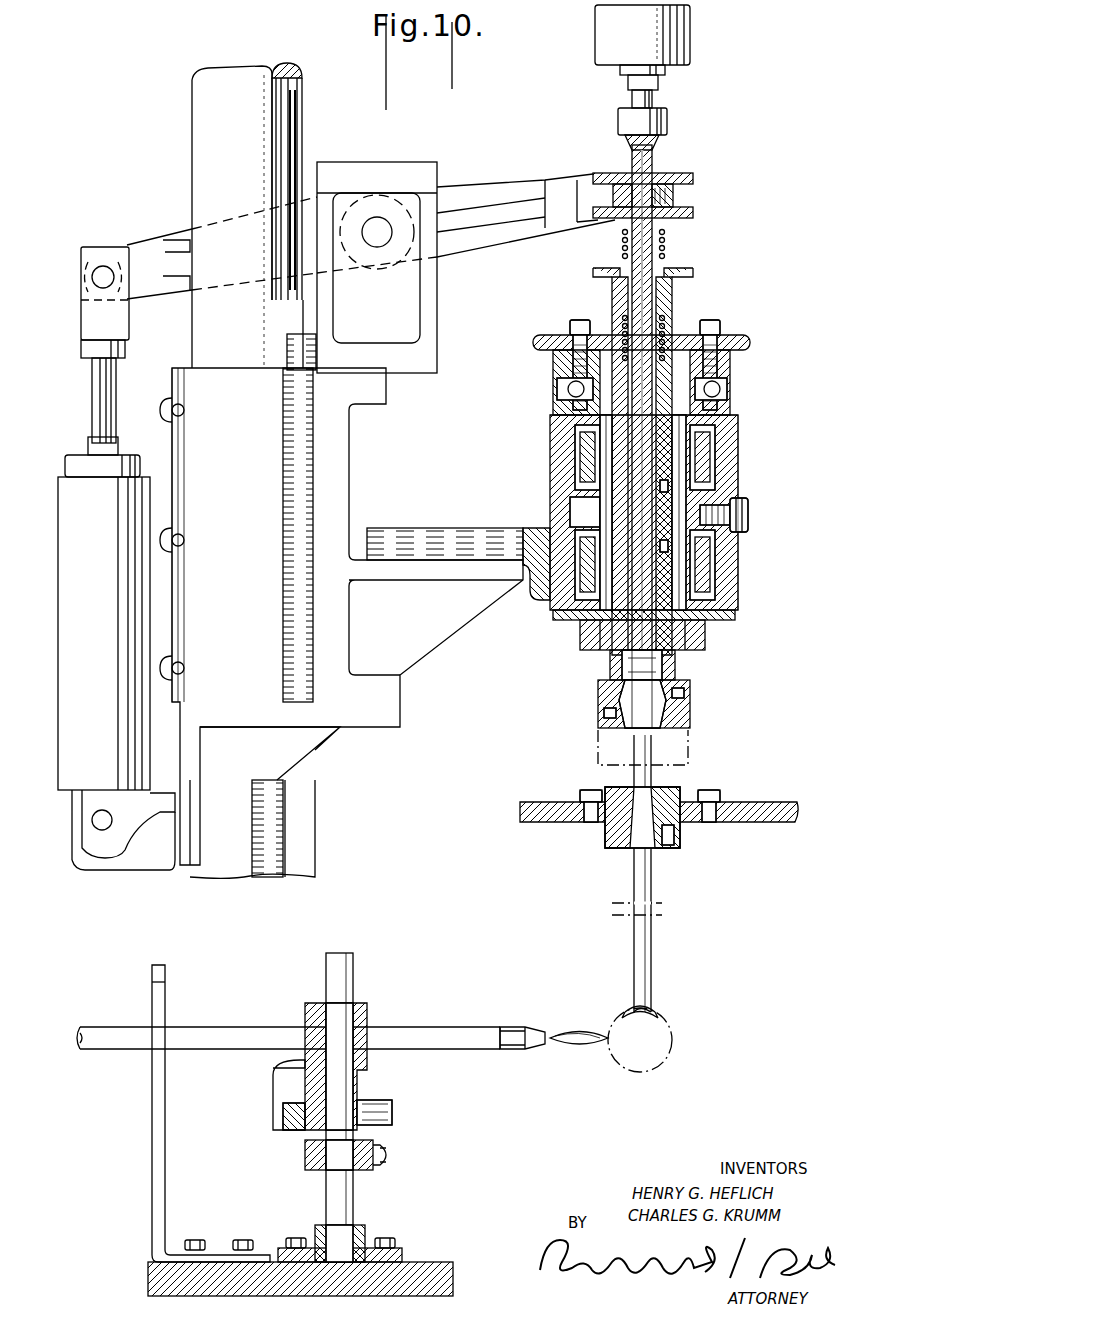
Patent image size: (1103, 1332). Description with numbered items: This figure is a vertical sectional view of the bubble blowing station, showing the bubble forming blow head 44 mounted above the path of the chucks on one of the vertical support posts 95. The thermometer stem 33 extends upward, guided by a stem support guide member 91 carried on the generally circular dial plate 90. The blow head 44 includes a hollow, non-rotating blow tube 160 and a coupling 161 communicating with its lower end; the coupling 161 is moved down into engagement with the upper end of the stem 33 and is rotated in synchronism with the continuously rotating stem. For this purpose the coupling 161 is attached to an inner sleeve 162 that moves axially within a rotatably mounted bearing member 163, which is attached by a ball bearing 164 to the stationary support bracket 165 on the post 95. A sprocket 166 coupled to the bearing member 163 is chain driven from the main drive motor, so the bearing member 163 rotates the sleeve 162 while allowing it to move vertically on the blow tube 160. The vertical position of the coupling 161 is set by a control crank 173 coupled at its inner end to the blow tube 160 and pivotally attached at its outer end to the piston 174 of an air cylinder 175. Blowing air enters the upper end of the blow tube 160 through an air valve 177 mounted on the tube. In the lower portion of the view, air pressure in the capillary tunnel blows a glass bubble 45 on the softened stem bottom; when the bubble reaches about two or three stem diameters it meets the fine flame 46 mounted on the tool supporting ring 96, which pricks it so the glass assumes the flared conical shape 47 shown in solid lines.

The stem portion 33 is at (647, 935).
The bubble forming blow head 44 is at (760, 568).
The glass bubble 45 is at (673, 1043).
The flame 46 is at (575, 1042).
The flared conical shape 47 is at (657, 1015).
The dial plate 90 is at (760, 807).
The stem support guide member 91 is at (667, 787).
The vertical support post 95 is at (293, 131).
The tool supporting ring 96 is at (437, 1272).
The blow tube 160 is at (660, 256).
The coupling 161 is at (687, 718).
The inner sleeve 162 is at (670, 363).
The bearing member 163 is at (687, 447).
The ball bearing 164 is at (730, 402).
The support bracket 165 is at (733, 472).
The sprocket 166 is at (737, 337).
The control crank 173 is at (492, 190).
The piston 174 is at (96, 388).
The air cylinder 175 is at (75, 578).
The air valve 177 is at (688, 52).